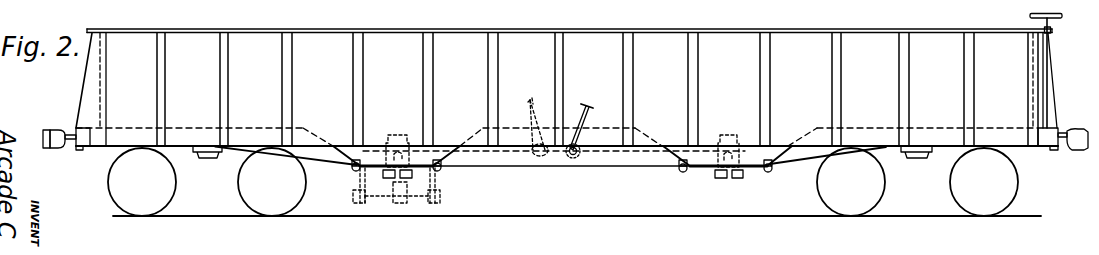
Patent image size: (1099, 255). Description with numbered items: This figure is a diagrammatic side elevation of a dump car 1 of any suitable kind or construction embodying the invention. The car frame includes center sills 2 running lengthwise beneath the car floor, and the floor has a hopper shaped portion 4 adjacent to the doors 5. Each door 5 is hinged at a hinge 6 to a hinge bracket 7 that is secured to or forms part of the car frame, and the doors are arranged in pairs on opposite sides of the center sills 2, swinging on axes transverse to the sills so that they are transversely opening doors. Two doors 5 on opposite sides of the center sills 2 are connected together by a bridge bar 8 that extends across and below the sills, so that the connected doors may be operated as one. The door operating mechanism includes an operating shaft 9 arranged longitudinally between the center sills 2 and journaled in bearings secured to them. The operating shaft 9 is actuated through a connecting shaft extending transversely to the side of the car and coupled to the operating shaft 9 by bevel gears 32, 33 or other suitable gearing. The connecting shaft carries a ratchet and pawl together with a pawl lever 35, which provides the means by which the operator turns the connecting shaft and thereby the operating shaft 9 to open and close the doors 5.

The dump car 1 is at (565, 115).
The center sills 2 is at (623, 163).
The hopper shaped portion 4 is at (352, 153).
The doors 5 is at (420, 170).
The hinge 6 is at (356, 172).
The hinge brackets 7 is at (446, 169).
The bridge bar 8 is at (388, 179).
The operating shaft 9 is at (592, 153).
The bevel gear 32 is at (532, 156).
The bevel gear 33 is at (543, 156).
The pawl lever 35 is at (588, 100).